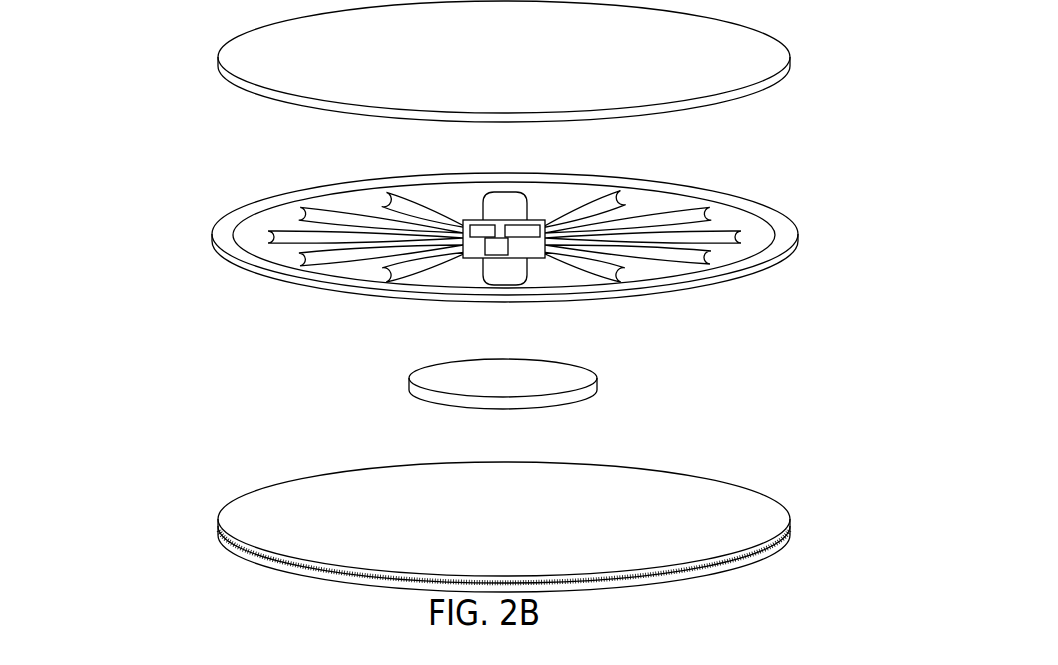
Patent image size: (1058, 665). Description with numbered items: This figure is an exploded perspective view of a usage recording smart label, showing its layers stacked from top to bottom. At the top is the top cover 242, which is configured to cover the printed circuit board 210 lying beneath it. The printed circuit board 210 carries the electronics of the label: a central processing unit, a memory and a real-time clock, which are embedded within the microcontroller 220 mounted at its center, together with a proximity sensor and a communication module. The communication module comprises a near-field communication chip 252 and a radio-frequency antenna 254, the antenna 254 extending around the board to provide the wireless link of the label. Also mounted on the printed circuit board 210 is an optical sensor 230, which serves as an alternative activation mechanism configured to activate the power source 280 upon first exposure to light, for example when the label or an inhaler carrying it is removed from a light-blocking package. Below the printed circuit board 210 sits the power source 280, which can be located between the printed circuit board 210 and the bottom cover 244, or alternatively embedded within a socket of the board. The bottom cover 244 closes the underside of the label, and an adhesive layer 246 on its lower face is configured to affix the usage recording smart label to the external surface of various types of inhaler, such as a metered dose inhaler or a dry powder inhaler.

The top cover 242 is at (218, 58).
The radio-frequency (RF) antenna 254 is at (222, 233).
The printed circuit board 210 is at (267, 250).
The near-field communication (NFC) chip 252 is at (480, 230).
The optical sensor 230 is at (527, 230).
The microcontroller 220 is at (495, 250).
The power source 280 is at (597, 392).
The bottom cover 244 is at (217, 508).
The adhesive layer 246 is at (780, 548).